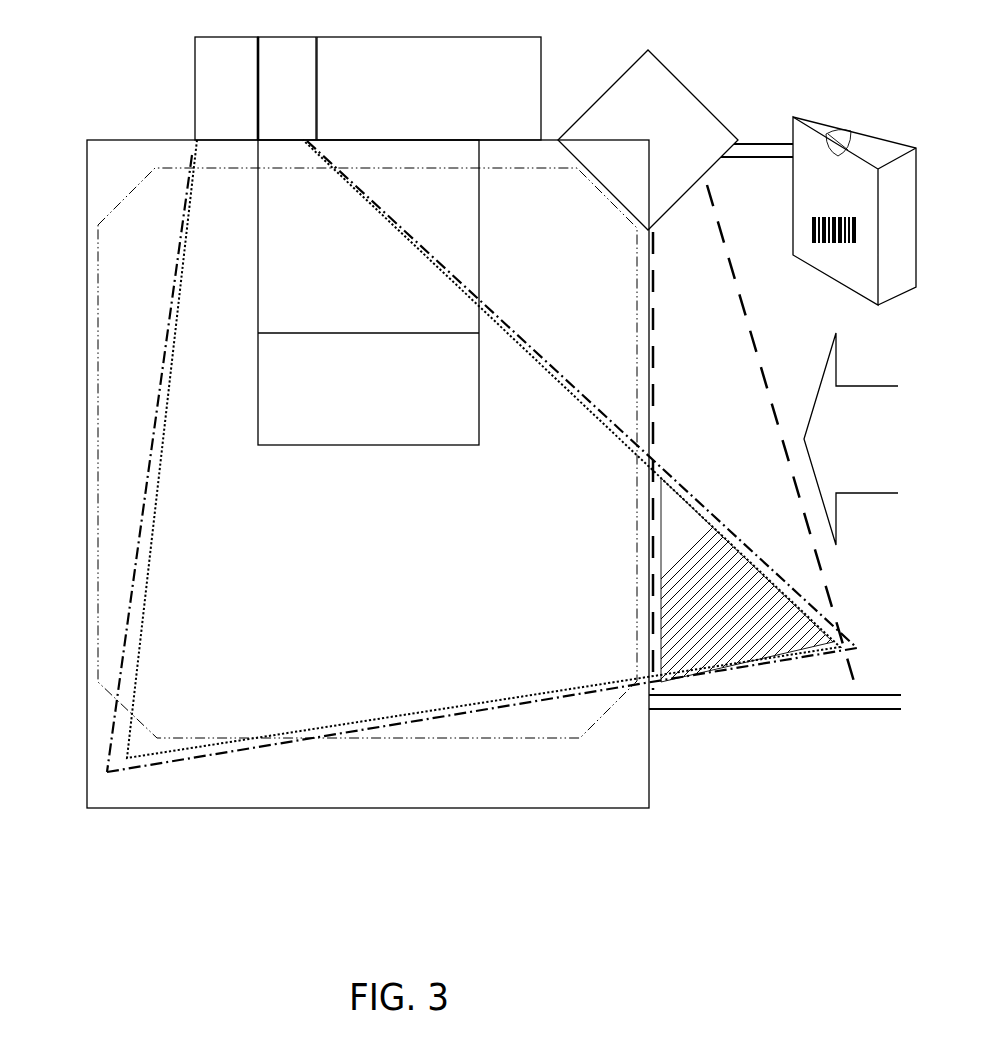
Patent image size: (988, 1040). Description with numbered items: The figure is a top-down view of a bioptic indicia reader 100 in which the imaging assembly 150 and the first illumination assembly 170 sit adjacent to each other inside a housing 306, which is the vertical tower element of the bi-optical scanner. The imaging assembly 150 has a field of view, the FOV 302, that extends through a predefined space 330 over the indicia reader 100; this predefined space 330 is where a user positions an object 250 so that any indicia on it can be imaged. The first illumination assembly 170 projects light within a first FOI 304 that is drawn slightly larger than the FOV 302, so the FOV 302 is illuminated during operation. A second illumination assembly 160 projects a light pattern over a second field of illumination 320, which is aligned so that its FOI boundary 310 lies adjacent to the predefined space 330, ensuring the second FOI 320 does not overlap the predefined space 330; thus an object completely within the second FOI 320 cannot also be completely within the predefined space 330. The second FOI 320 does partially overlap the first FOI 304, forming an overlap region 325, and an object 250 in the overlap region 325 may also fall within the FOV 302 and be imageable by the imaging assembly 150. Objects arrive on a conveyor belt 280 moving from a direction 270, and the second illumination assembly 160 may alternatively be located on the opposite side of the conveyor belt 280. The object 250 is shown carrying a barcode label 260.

The indicia reader 100 is at (88, 218).
The predefined space 330 is at (98, 280).
The first illumination assembly 170 is at (226, 88).
The imaging assembly 150 is at (287, 88).
The housing 306 is at (418, 37).
The second illumination assembly 160 is at (630, 63).
The object 250 is at (848, 112).
The barcode 260 is at (813, 221).
The direction 270 is at (851, 439).
The conveyor belt 280 is at (782, 440).
The second field of illumination 320 is at (775, 522).
The FOI boundary 310 is at (653, 383).
The FOV 302 is at (170, 365).
The first FOI 304 is at (107, 771).
The overlap region 325 is at (667, 546).